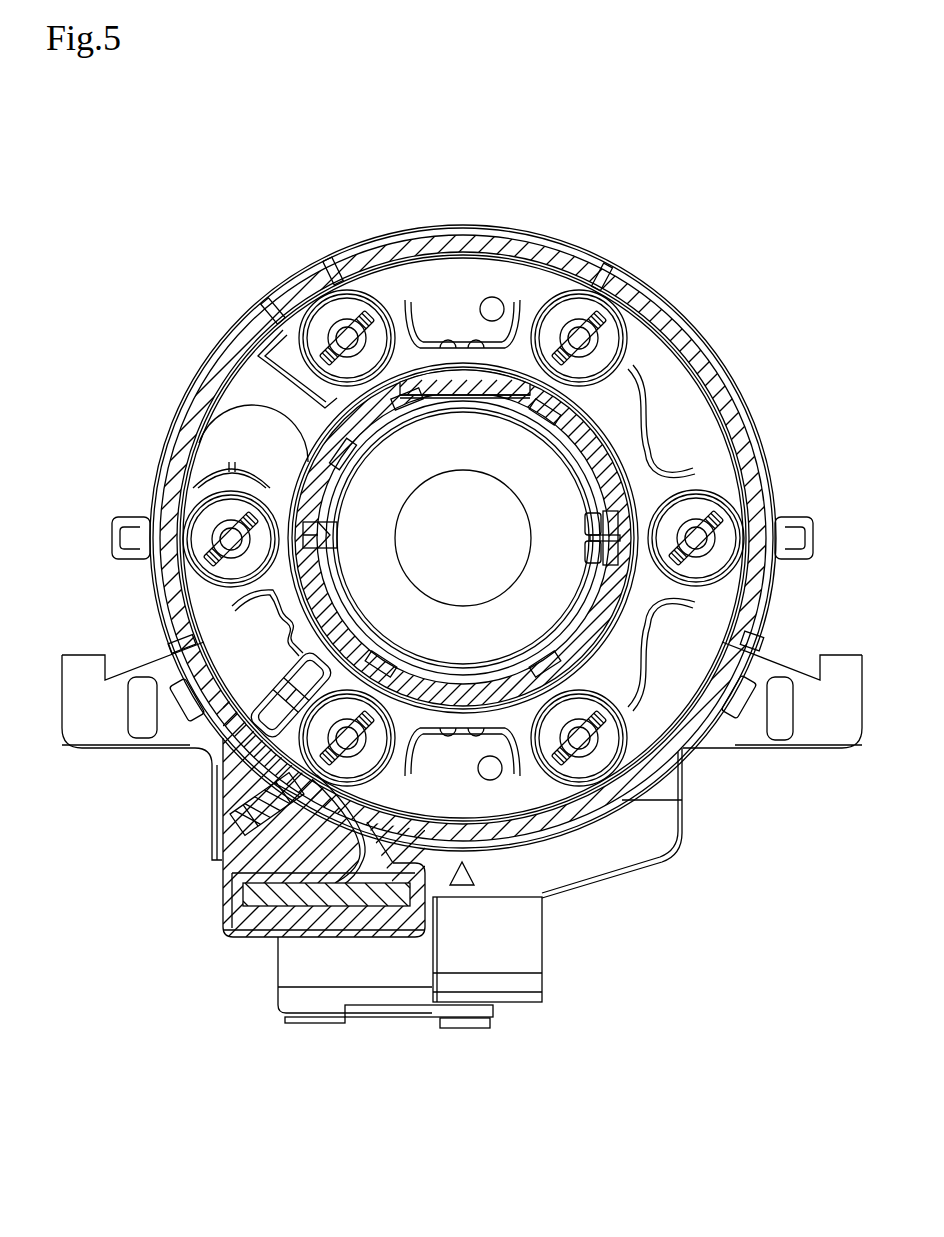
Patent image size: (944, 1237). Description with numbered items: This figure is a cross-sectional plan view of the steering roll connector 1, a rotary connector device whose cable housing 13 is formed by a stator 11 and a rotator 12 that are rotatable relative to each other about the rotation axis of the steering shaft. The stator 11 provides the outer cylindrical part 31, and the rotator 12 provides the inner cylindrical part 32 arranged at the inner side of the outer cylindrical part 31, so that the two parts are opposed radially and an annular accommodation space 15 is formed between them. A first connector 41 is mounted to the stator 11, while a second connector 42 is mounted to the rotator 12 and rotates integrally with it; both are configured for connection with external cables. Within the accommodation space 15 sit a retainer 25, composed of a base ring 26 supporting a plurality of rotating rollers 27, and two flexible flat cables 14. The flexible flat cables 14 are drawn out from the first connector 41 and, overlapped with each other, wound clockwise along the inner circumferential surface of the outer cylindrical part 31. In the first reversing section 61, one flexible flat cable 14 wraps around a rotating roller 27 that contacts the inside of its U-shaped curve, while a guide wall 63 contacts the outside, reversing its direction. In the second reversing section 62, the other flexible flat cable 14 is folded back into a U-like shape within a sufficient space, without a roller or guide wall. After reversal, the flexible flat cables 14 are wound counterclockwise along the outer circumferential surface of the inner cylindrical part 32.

The steering roll connector 1 is at (181, 257).
The stator 11 is at (182, 765).
The rotator 12 is at (590, 592).
The cable housing 13 is at (706, 908).
The flexible flat cable 14 is at (428, 668).
The accommodation space 15 is at (477, 270).
The retainer 25 is at (757, 650).
The base ring 26 is at (660, 663).
The rotating roller 27 is at (408, 688).
The outer cylindrical part 31 is at (748, 462).
The inner cylindrical part 32 is at (608, 473).
The first connector 41 is at (253, 920).
The second connector 42 is at (448, 380).
The first reversing section 61 is at (265, 695).
The second reversing section 62 is at (257, 440).
The guide wall 63 is at (345, 665).